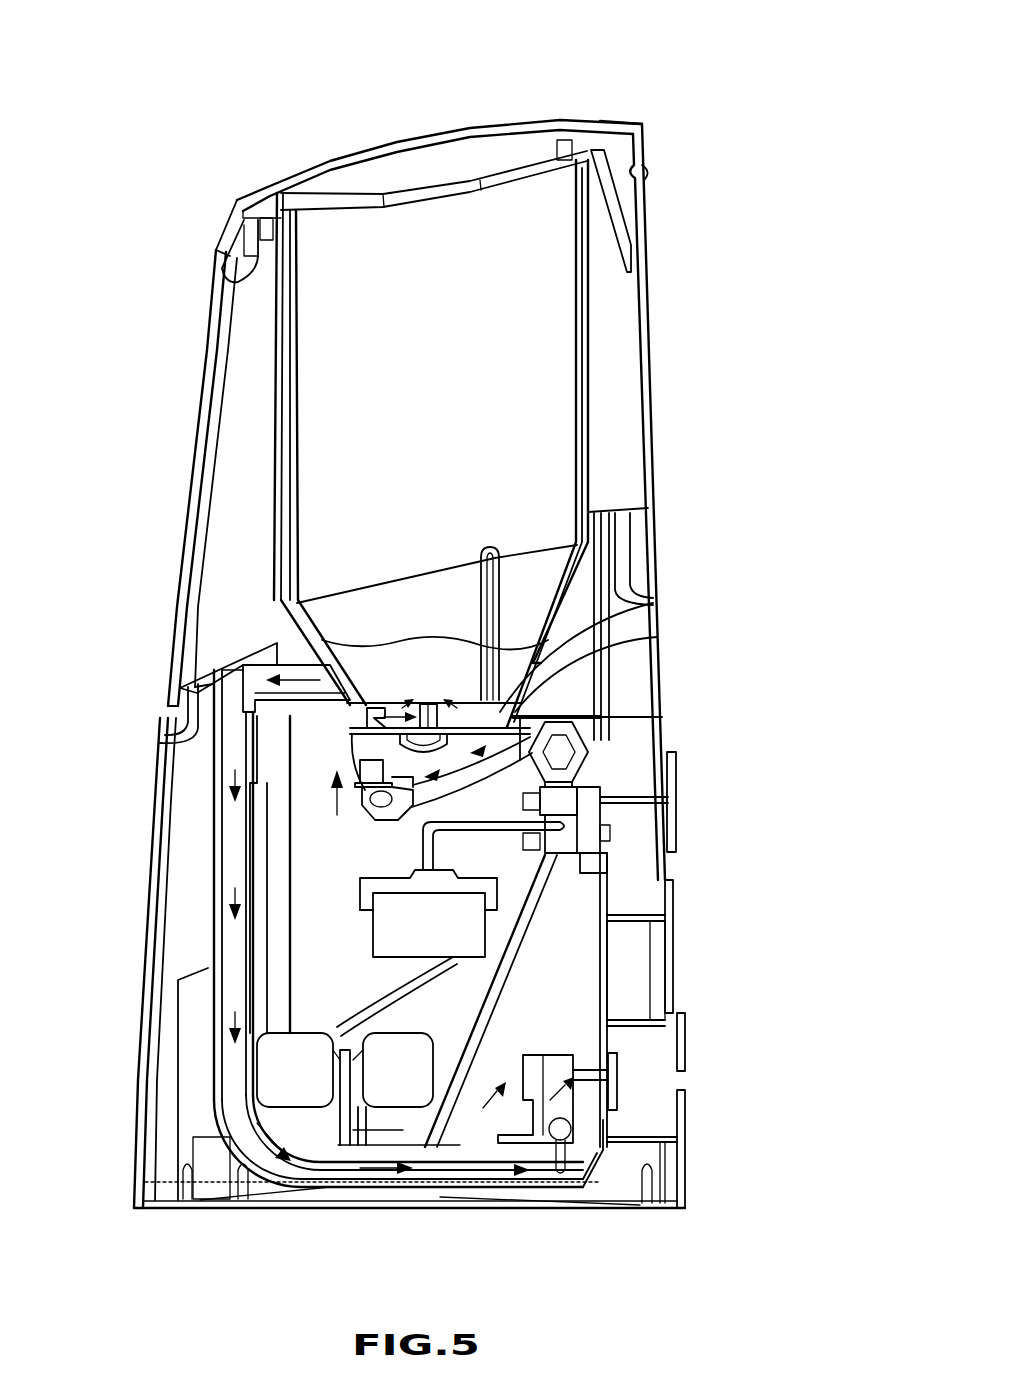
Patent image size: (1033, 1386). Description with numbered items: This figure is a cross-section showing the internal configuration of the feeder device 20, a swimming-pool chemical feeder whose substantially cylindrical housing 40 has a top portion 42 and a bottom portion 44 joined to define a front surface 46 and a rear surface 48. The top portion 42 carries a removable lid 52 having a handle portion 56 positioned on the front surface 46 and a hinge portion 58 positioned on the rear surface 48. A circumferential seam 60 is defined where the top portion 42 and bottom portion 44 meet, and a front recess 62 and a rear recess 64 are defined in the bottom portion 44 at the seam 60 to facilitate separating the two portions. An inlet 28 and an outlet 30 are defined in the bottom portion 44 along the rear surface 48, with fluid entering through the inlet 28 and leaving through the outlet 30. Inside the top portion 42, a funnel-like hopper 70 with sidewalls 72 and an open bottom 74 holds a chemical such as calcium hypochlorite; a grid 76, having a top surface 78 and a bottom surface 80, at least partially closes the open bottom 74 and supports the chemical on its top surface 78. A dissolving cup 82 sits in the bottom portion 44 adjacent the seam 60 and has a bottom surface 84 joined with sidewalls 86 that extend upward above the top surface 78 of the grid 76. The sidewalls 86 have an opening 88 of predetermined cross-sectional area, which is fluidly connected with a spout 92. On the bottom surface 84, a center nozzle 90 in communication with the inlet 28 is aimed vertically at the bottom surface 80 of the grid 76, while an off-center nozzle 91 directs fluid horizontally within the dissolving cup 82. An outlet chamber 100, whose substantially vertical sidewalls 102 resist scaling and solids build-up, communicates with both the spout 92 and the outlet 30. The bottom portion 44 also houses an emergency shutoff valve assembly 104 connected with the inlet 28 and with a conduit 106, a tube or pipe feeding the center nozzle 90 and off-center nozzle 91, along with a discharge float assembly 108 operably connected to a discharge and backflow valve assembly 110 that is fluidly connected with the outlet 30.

The feeder device 20 is at (636, 40).
The inlet 28 is at (640, 867).
The outlet 30 is at (627, 1078).
The housing 40 is at (688, 112).
The top portion 42 is at (657, 440).
The bottom portion 44 is at (140, 1015).
The front surface 46 is at (200, 398).
The rear surface 48 is at (652, 388).
The removable lid 52 is at (420, 135).
The handle portion 56 is at (230, 242).
The hinge portion 58 is at (650, 176).
The circumferential seam 60 is at (270, 645).
The front recess 62 is at (180, 725).
The rear recess 64 is at (643, 587).
The hopper 70 is at (562, 375).
The sidewalls 72 is at (292, 322).
The open bottom 74 is at (362, 700).
The grid 76 is at (412, 700).
The top surface 78 is at (455, 690).
The bottom surface 80 is at (660, 637).
The dissolving cup 82 is at (660, 717).
The bottom surface 84 is at (560, 763).
The sidewalls 86 is at (657, 605).
The opening 88 is at (343, 693).
The center nozzle 90 is at (565, 720).
The off-center nozzle 91 is at (337, 818).
The spout 92 is at (242, 670).
The outlet chamber 100 is at (453, 1137).
The substantially vertical sidewalls 102 is at (214, 850).
The emergency shutoff valve assembly 104 is at (505, 932).
The conduit 106 is at (477, 767).
The discharge float assembly 108 is at (330, 1020).
The discharge and backflow valve assembly 110 is at (455, 1130).